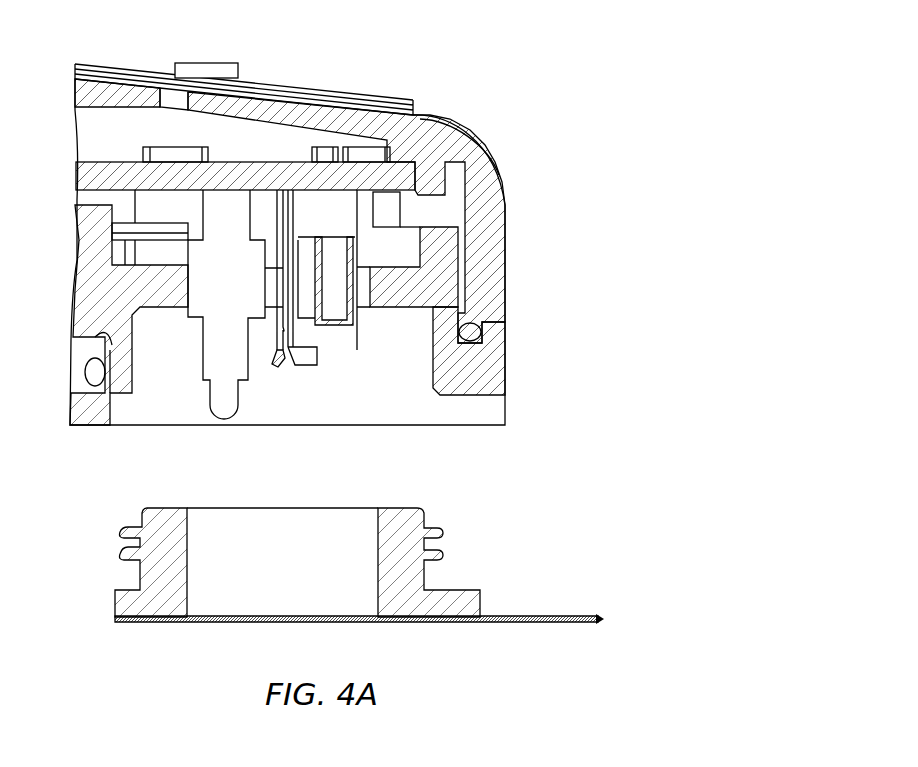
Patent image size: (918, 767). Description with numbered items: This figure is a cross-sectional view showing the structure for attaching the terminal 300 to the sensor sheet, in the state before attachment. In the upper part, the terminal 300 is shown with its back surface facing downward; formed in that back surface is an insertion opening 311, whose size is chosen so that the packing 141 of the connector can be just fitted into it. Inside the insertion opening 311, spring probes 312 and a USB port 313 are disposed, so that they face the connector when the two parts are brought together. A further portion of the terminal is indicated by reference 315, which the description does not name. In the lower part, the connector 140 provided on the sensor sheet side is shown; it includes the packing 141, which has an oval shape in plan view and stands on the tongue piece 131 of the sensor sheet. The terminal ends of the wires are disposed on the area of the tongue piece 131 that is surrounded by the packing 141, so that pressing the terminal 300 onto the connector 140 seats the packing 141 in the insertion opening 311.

The terminal 300 is at (368, 104).
The insertion opening 311 is at (267, 412).
The spring probes 312 is at (226, 405).
The USB port 313 is at (355, 357).
The seal block 315 is at (452, 358).
The connector 140 is at (450, 506).
The packing 141 is at (143, 568).
The tongue piece 131 is at (546, 614).